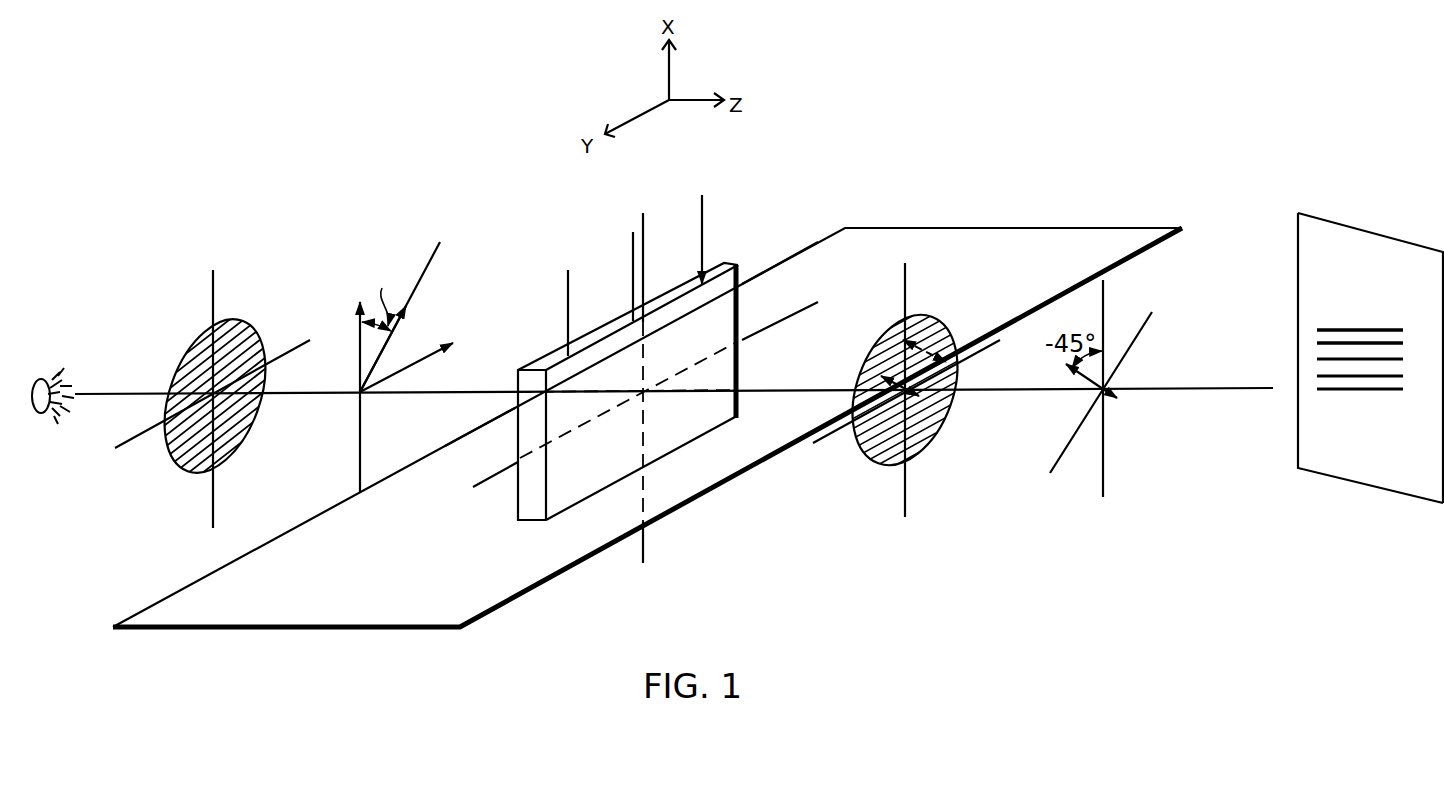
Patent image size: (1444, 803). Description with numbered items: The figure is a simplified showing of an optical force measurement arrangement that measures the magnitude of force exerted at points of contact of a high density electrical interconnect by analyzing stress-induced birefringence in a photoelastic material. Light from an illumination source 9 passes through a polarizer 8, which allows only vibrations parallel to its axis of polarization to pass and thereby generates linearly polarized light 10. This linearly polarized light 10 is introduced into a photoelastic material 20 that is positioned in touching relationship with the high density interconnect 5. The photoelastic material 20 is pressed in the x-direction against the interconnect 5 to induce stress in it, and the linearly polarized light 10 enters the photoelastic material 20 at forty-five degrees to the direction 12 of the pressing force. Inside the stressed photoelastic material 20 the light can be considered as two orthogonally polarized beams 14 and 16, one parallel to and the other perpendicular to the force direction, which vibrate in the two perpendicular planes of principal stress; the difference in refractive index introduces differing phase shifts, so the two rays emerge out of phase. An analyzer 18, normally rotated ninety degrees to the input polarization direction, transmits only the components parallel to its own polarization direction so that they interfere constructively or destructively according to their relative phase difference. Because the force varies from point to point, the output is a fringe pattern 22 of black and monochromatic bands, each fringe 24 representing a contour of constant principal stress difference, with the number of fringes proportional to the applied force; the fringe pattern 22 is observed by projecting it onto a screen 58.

The high density interconnect 5 is at (983, 223).
The polarizer 8 is at (258, 416).
The illumination source 9 is at (60, 378).
The linearly polarized light 10 is at (420, 276).
The direction of the pressing force 12 is at (704, 228).
The orthogonally polarized beam 14 is at (357, 322).
The orthogonally polarized beam 16 is at (440, 352).
The analyzer 18 is at (952, 297).
The photoelastic material 20 is at (513, 493).
The fringe pattern 22 is at (1320, 303).
The fringe 24 is at (1340, 336).
The screen 58 is at (1331, 218).